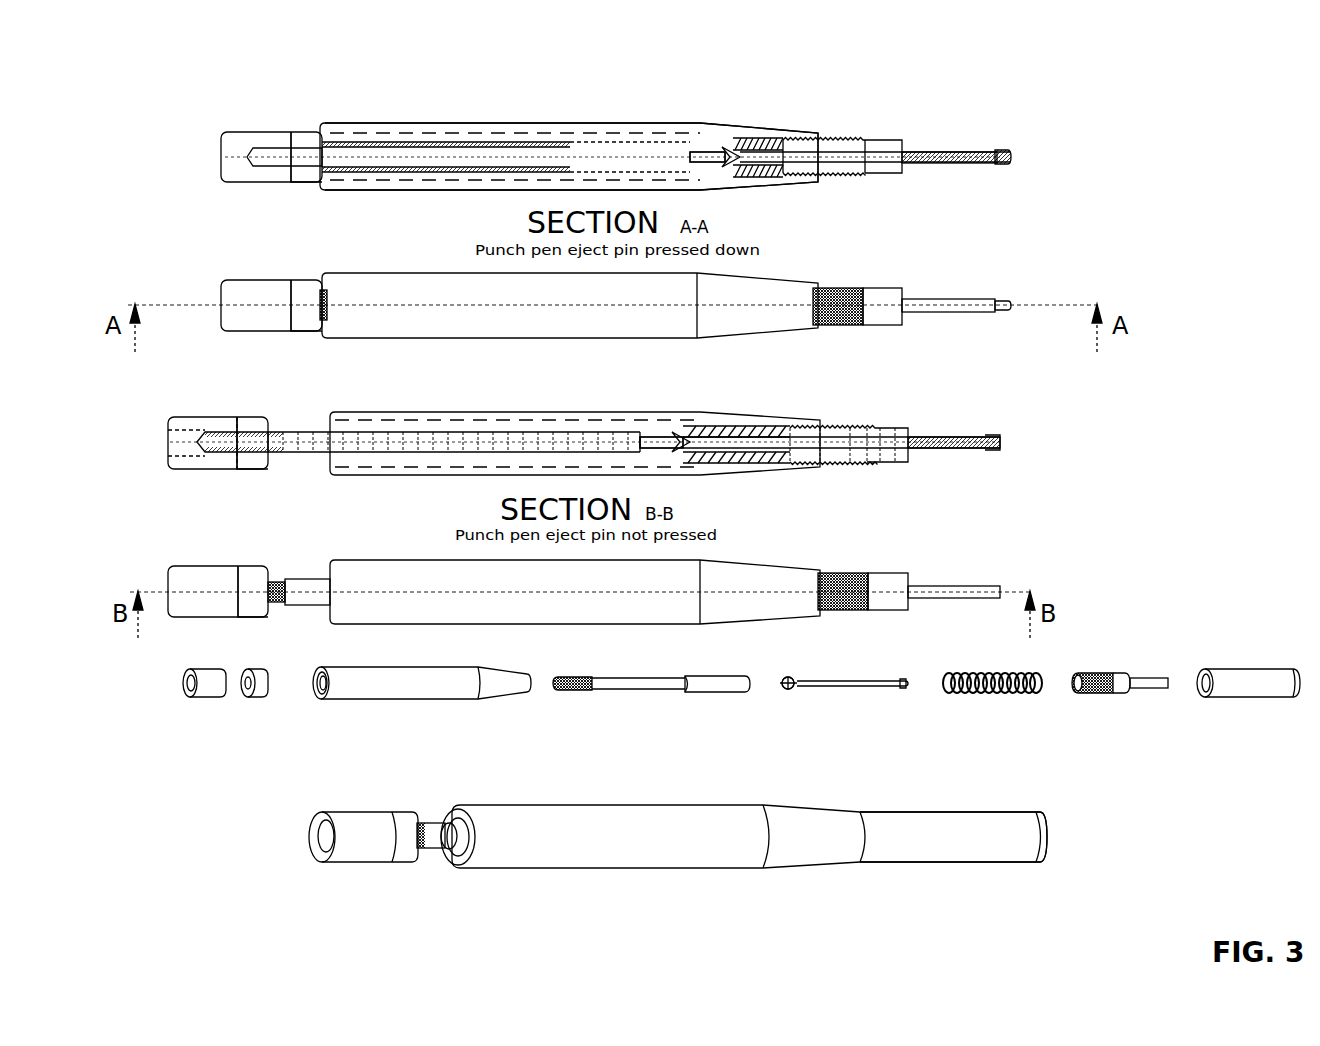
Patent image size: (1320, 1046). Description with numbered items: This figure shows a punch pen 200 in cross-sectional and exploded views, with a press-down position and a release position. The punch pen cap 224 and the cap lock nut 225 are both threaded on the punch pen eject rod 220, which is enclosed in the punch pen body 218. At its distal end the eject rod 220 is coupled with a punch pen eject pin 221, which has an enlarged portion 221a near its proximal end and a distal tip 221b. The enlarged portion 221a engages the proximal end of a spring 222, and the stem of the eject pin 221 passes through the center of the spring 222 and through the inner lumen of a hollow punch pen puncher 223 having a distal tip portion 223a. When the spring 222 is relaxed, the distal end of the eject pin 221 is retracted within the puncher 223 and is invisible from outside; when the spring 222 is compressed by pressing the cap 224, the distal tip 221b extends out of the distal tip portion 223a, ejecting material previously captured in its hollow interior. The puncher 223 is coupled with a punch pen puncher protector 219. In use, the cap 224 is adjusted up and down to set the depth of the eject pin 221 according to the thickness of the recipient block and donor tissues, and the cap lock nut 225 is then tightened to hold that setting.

The punch pen 200 is at (200, 108).
The punch pen body 218 is at (615, 412).
The punch pen puncher protector 219 is at (1219, 703).
The punch pen eject rod 220 is at (308, 432).
The punch pen eject pin 221 is at (762, 450).
The enlarged portion 221a is at (785, 690).
The distal tip 221b is at (1005, 165).
The spring 222 is at (700, 455).
The punch pen puncher 223 is at (850, 463).
The distal tip portion 223a is at (957, 599).
The punch pen cap 224 is at (185, 417).
The cap lock nut 225 is at (243, 417).